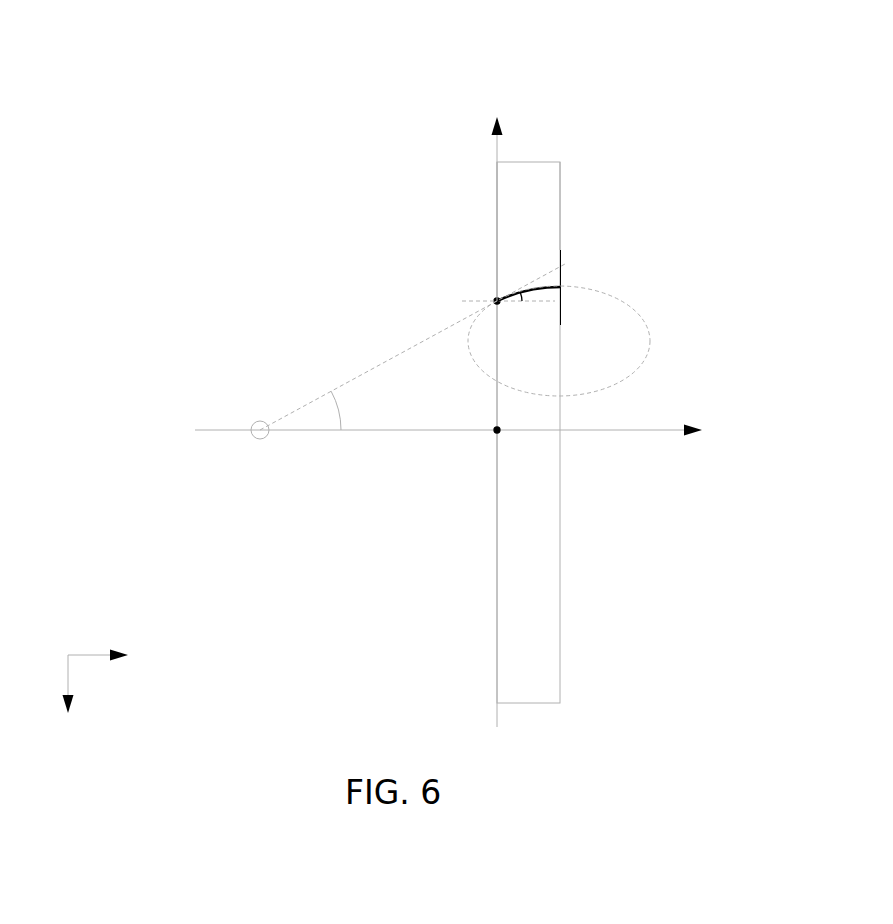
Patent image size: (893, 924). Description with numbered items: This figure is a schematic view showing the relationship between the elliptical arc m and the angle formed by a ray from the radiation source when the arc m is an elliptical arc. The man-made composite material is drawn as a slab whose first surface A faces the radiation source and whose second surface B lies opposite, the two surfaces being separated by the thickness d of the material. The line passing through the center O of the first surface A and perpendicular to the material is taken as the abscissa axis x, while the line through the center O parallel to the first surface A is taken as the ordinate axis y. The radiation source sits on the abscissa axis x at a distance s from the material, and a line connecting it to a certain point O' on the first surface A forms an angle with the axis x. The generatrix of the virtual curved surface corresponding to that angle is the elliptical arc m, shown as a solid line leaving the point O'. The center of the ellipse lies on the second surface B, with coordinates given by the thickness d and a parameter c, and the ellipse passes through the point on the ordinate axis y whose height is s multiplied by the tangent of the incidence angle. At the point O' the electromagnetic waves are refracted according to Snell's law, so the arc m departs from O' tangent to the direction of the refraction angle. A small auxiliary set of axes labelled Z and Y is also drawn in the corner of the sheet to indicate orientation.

The thickness of the man-made composite material d is at (560, 82).
The ordinate axis y is at (496, 408).
The abscissa axis x is at (464, 430).
The center of the first surface O is at (488, 439).
The point on the first surface O' is at (508, 289).
The distance from the radiation source to the man-made composite material s is at (488, 478).
The elliptical arc m is at (551, 287).
The first surface A is at (497, 207).
The second surface B is at (561, 194).
The Z axis Z is at (109, 655).
The Y axis Y is at (67, 700).